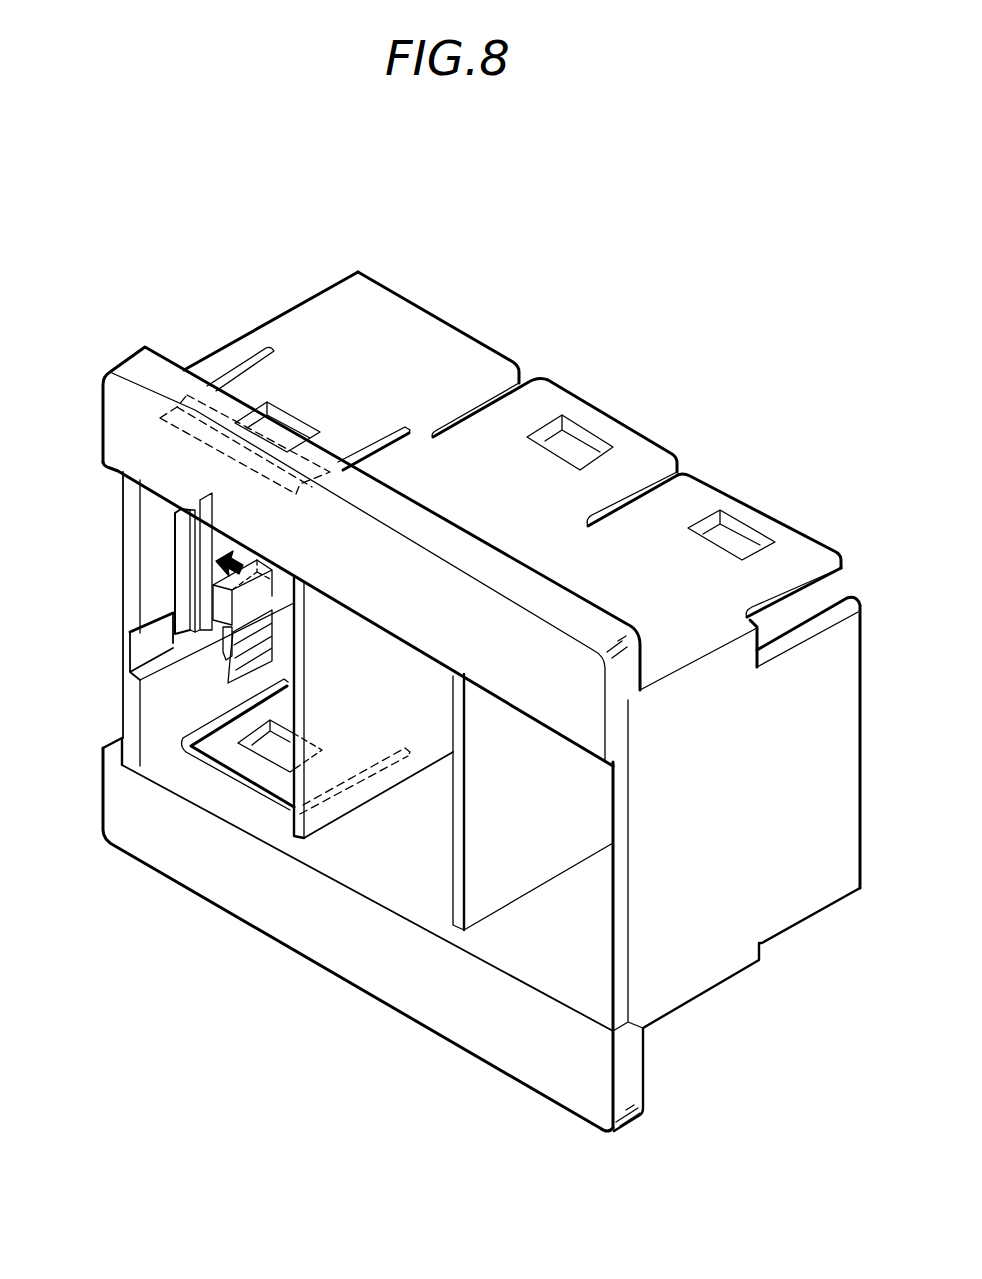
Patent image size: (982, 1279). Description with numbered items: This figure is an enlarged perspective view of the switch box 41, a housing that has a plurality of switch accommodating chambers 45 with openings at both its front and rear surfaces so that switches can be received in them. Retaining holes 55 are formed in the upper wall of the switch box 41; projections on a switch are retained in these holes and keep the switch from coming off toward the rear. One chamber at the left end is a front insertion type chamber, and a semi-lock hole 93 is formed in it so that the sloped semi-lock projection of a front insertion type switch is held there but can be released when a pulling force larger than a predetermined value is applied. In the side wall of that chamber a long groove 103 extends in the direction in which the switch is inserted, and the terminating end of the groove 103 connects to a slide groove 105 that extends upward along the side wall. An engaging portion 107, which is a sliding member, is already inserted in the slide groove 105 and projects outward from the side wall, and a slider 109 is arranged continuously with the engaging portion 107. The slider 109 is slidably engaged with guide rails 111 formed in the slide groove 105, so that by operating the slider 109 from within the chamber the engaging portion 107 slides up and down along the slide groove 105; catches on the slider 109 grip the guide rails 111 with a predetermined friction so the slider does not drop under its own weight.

The switch box 41 is at (497, 242).
The switch accommodating chamber 45 is at (530, 938).
The retaining hole 55 is at (730, 538).
The semi-lock hole 93 is at (287, 413).
The long groove 103 is at (140, 645).
The slide groove 105 is at (173, 548).
The engaging portion 107 is at (268, 722).
The slider 109 is at (228, 665).
The guide rail 111 is at (195, 532).